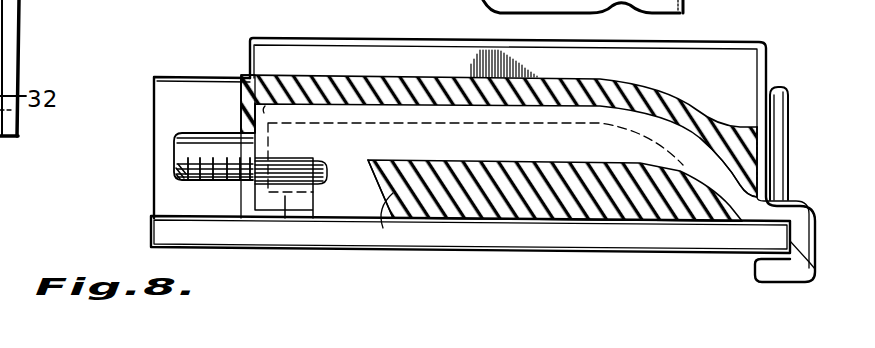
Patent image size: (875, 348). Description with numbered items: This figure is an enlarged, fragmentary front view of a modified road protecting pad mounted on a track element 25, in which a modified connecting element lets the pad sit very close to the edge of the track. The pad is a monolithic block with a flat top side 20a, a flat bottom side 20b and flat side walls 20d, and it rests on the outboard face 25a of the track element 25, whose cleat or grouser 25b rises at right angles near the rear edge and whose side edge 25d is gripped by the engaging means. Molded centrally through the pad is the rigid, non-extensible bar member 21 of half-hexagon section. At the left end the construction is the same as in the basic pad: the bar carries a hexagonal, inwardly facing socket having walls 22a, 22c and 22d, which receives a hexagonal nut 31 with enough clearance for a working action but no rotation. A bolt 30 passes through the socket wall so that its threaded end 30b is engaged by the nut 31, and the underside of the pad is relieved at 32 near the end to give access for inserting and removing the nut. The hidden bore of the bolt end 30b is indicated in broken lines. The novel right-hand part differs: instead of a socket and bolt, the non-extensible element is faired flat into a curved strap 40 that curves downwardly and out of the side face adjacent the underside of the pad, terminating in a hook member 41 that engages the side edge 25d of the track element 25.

The side surfaces or walls 20d is at (251, 63).
The top side 20a is at (335, 39).
The hook member 41 is at (819, 223).
The side edge of track element 25d is at (814, 269).
The cleat or grouser 25b is at (788, 113).
The socket member wall 22c is at (265, 192).
The socket member wall 22d is at (302, 68).
The bar member 21 is at (330, 78).
The curved strap 40 is at (748, 205).
The bolt 30 is at (177, 136).
The threaded end of bolt shaft 30b is at (329, 168).
The hexagonal nut 31 is at (320, 188).
The socket member wall 22a is at (288, 217).
The relief 32 is at (383, 229).
The bottom side 20b is at (578, 221).
The outboard face of track element 25a is at (481, 214).
The track element 25 is at (693, 241).